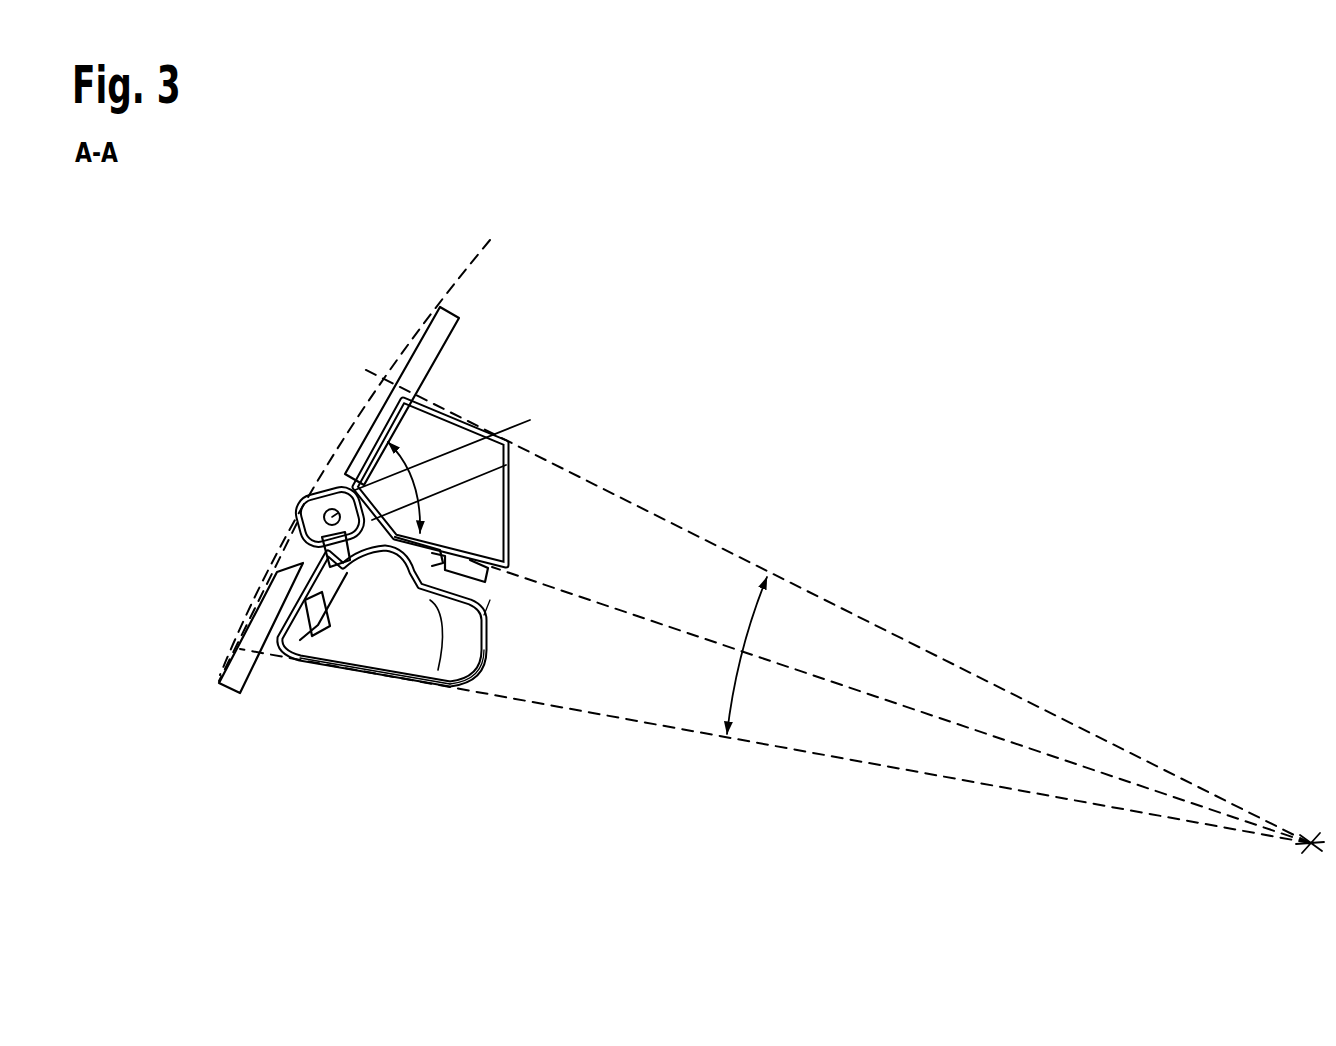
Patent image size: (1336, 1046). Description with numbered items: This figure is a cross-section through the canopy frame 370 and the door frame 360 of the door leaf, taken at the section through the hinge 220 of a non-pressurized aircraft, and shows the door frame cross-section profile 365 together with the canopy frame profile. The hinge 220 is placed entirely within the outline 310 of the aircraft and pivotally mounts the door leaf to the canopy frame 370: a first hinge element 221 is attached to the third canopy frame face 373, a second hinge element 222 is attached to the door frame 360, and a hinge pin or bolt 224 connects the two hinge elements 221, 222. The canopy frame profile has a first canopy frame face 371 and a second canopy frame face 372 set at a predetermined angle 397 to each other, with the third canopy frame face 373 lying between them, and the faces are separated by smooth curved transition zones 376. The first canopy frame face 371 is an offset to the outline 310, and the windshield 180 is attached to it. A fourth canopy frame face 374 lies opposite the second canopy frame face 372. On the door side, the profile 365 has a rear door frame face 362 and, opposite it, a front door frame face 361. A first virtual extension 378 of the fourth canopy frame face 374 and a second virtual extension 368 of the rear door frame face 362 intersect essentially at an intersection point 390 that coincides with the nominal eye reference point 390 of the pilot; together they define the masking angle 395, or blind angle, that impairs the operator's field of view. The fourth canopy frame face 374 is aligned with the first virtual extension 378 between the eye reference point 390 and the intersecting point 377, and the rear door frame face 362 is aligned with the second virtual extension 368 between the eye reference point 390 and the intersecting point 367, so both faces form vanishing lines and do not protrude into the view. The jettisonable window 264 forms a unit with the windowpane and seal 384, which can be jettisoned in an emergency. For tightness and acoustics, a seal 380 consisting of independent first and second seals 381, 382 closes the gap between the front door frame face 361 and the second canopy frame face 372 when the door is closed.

The windshield 180 is at (442, 354).
The hinge 220 is at (300, 519).
The first hinge element 221 is at (310, 486).
The second hinge element 222 is at (300, 496).
The hinge pin or bolt 224 is at (300, 492).
The jettisonable window 264 is at (238, 686).
The outline of the non-pressurized aircraft 310 is at (466, 268).
The door frame 360 is at (486, 661).
The front door frame face 361 is at (440, 566).
The rear door frame face 362 is at (376, 668).
The door frame cross-section profile 365 is at (470, 667).
The intersecting point 367 is at (229, 653).
The second virtual extension 368 is at (885, 766).
The canopy frame 370 is at (518, 482).
The first canopy frame face 371 is at (354, 478).
The second canopy frame face 372 is at (443, 543).
The third canopy frame face 373 is at (320, 486).
The fourth canopy frame face 374 is at (530, 420).
The smooth curved transition zones 376 is at (328, 480).
The intersecting point 377 is at (379, 372).
The first virtual extension 378 is at (1000, 688).
The seal 380 is at (316, 538).
The first seal 381 is at (488, 572).
The second seal 382 is at (493, 600).
The windowpane and seal 384 is at (306, 636).
The intersection point / nominal eye reference point 390 is at (1310, 856).
The masking angle 395 is at (757, 619).
The predetermined angle 397 is at (413, 487).